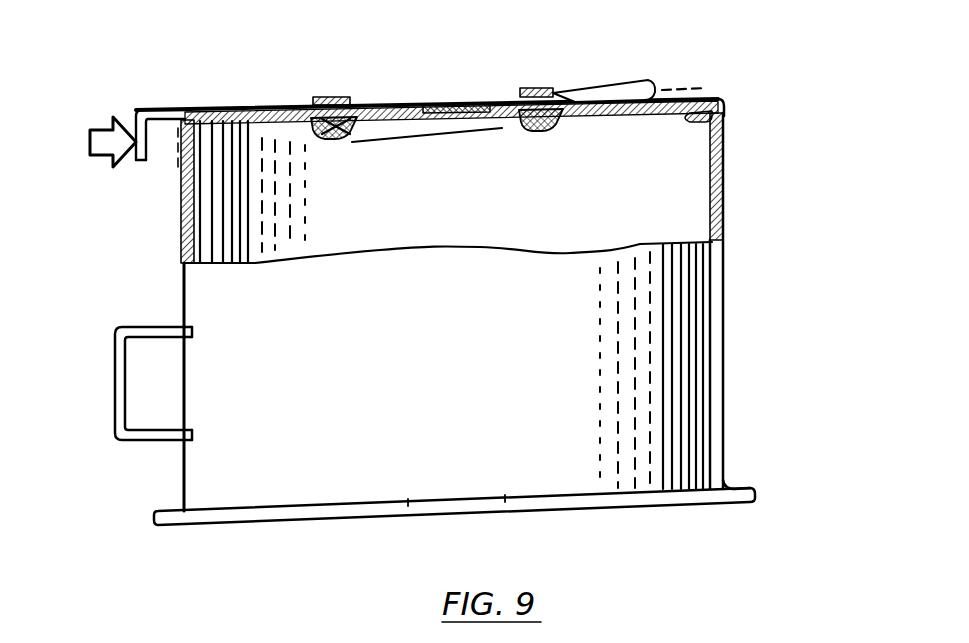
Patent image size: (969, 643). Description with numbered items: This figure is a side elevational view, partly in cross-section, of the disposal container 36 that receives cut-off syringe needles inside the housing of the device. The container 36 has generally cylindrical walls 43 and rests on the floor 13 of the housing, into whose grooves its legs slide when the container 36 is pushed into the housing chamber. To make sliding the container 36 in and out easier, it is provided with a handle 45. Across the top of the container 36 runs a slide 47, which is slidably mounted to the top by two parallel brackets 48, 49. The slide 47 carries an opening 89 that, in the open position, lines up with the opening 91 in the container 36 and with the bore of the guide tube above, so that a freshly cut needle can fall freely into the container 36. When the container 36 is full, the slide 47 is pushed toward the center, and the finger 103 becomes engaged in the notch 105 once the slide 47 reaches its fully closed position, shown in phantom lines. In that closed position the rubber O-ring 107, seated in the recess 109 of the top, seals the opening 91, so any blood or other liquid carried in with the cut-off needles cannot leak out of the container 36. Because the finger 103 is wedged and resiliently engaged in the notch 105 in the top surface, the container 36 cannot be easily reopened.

The floor 13 is at (260, 520).
The disposal container 36 is at (726, 292).
The cylindrical walls 43 is at (702, 388).
The handle 45 is at (118, 382).
The slide 47 is at (170, 106).
The bracket 48 is at (323, 98).
The bracket 49 is at (530, 90).
The opening in the slide 89 is at (428, 100).
The opening in the container 91 is at (432, 140).
The finger 103 is at (655, 80).
The notch 105 is at (707, 99).
The rubber O-ring 107 is at (327, 140).
The recess 109 is at (355, 137).